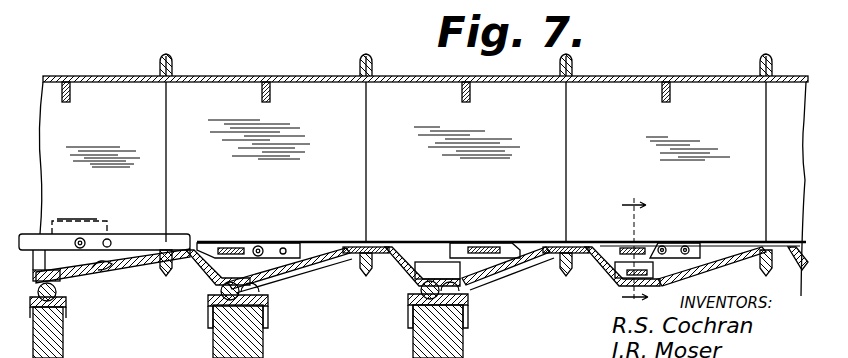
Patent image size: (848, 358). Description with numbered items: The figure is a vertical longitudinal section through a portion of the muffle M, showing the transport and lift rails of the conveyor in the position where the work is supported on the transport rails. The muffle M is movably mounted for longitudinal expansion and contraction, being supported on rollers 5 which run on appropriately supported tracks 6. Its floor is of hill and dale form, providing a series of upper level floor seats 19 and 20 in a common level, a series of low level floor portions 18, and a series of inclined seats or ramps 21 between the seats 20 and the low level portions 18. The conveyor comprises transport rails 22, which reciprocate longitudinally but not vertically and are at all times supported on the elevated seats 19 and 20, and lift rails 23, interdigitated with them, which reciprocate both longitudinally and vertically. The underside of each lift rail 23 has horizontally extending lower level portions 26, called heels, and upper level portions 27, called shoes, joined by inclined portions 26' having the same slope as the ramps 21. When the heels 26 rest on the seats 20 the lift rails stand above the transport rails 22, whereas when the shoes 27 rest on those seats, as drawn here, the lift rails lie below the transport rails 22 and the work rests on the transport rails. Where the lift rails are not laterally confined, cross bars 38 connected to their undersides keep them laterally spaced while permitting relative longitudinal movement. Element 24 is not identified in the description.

The muffle M is at (231, 70).
The transport rails 22 is at (131, 247).
The inclined seats or ramps 21 is at (113, 264).
The tracks 6 is at (268, 300).
The rollers 5 is at (418, 290).
The inclined link 24 is at (416, 280).
The lift rails 23 is at (306, 250).
The upper level floor seats 20 is at (350, 247).
The upper level floor seats 19 is at (376, 256).
The low level floor portions 18 is at (438, 278).
The lower level portions (heels) 26 is at (485, 230).
The inclined portions 26' is at (497, 224).
The upper level portions (shoes) 27 is at (600, 268).
The cross bars 38 is at (621, 246).